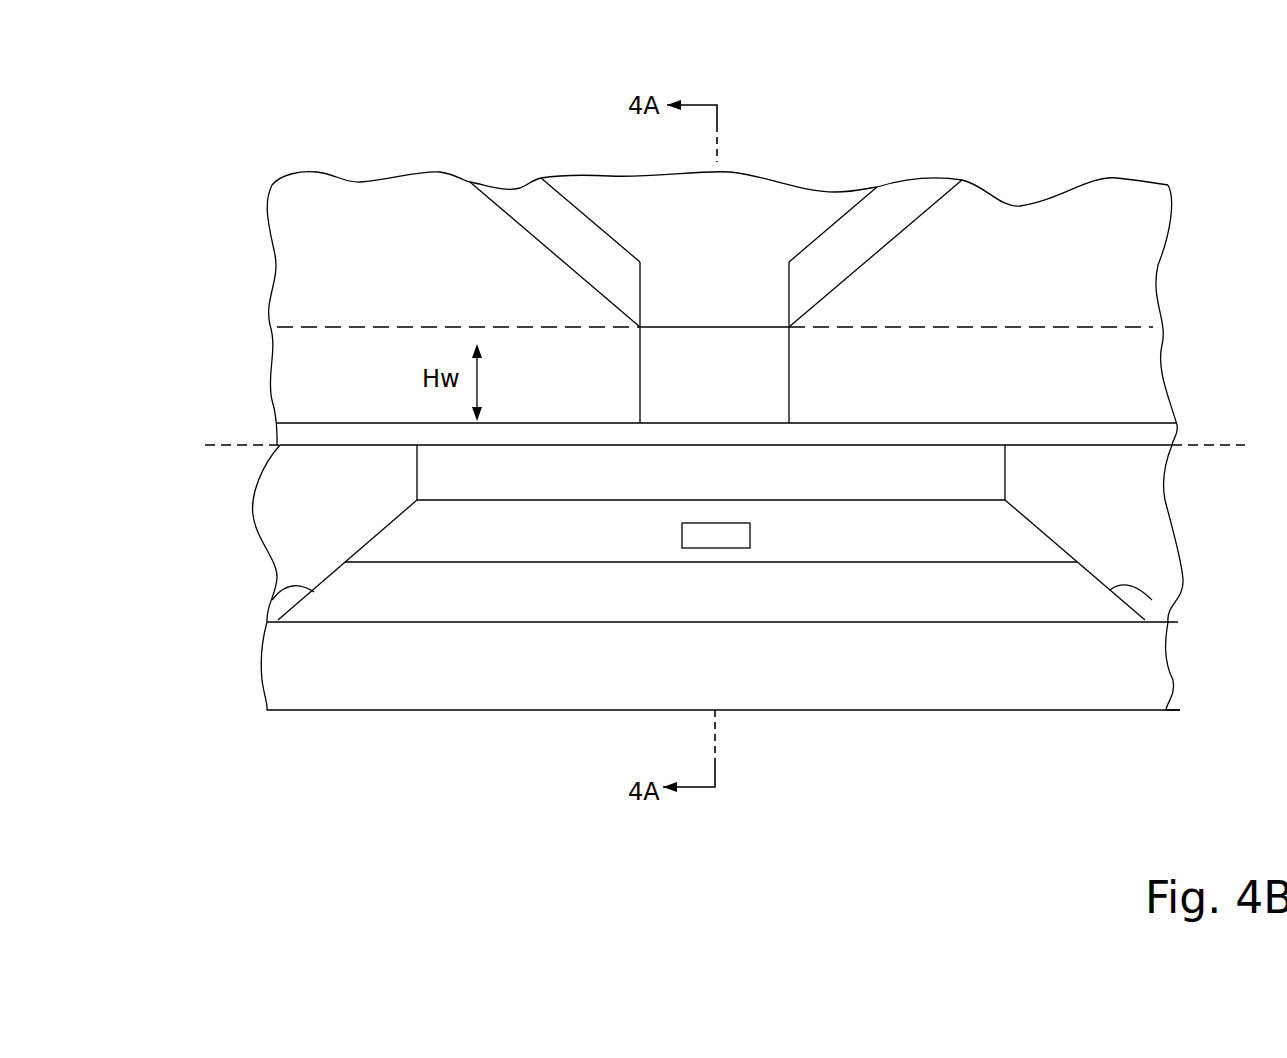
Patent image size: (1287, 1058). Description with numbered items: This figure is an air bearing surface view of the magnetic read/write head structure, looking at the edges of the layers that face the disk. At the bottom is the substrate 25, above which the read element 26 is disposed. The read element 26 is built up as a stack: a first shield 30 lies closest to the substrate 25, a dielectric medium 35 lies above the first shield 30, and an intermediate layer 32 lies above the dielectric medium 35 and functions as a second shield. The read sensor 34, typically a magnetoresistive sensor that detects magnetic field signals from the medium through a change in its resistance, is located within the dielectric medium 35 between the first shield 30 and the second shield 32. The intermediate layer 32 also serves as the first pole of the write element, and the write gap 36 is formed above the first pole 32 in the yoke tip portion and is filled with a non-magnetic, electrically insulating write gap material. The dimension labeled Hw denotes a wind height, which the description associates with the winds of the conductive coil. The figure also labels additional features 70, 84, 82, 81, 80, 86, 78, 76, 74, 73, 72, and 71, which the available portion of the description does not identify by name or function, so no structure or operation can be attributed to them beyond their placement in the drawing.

The semiconductor device 70 is at (1118, 70).
The dielectric stack 84 is at (112, 172).
The read element 26 is at (185, 437).
The upper dielectric layer 82 is at (374, 266).
The lower dielectric layer 81 is at (374, 404).
The interface of dielectric layers 80 is at (395, 322).
The gate 86 is at (765, 396).
The sidewall liner 78 is at (297, 437).
The sidewall liner 76 is at (1098, 445).
The channel surface plane 74 is at (243, 445).
The spacer edge 73 is at (835, 445).
The write gap 36 is at (620, 437).
The intermediate layer 32 is at (475, 486).
The dielectric medium 35 is at (464, 543).
The read sensor 34 is at (697, 535).
The first shield 30 is at (397, 603).
The isolation region 72 is at (342, 519).
The isolation liner 71 is at (280, 588).
The substrate 25 is at (322, 699).